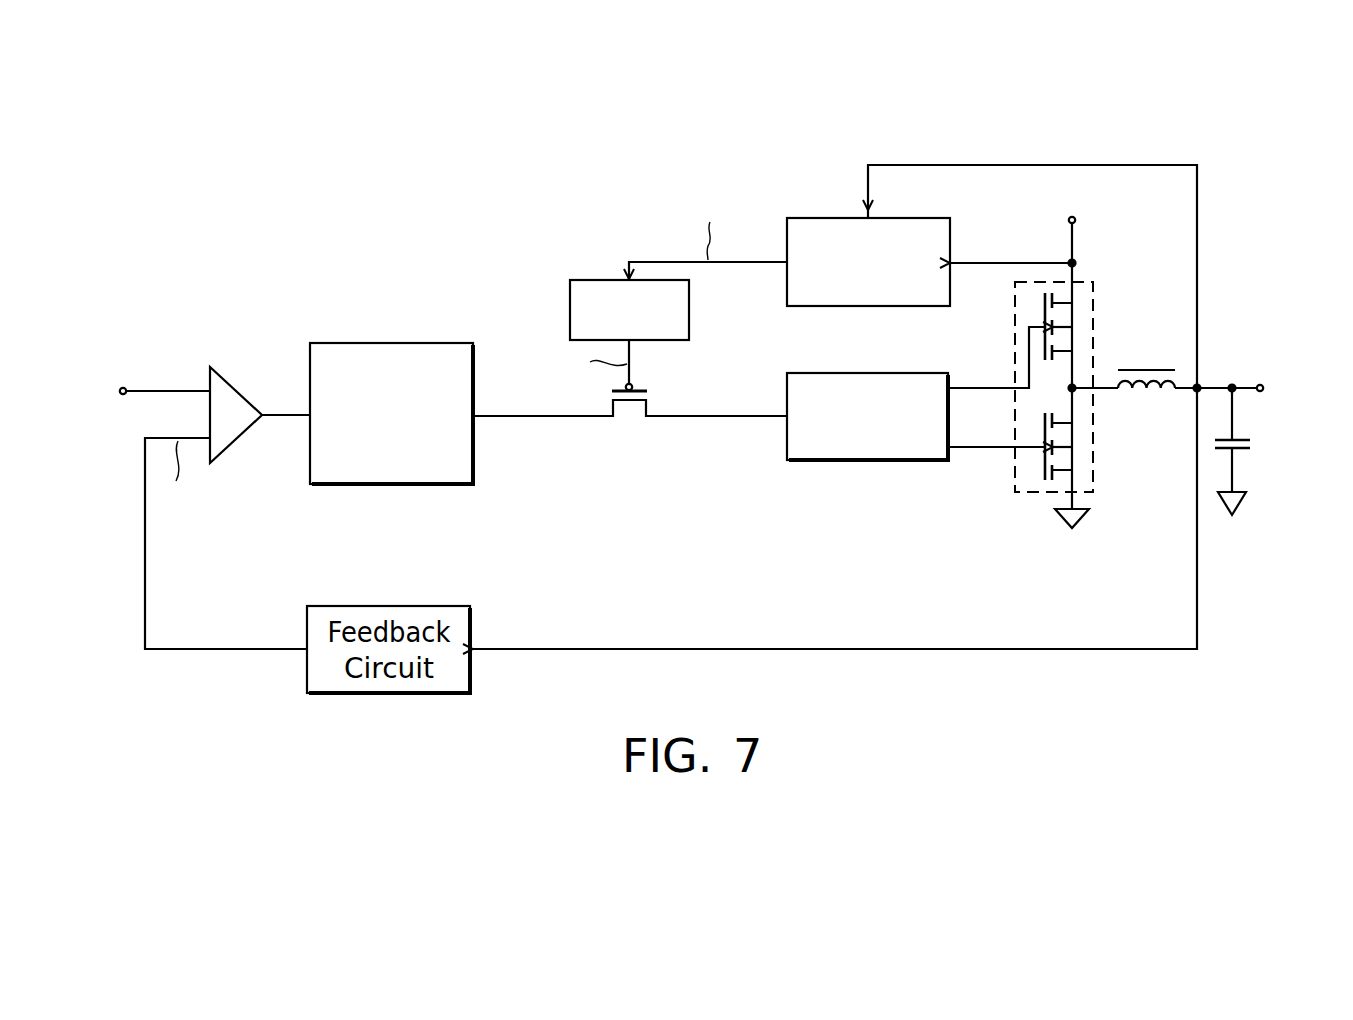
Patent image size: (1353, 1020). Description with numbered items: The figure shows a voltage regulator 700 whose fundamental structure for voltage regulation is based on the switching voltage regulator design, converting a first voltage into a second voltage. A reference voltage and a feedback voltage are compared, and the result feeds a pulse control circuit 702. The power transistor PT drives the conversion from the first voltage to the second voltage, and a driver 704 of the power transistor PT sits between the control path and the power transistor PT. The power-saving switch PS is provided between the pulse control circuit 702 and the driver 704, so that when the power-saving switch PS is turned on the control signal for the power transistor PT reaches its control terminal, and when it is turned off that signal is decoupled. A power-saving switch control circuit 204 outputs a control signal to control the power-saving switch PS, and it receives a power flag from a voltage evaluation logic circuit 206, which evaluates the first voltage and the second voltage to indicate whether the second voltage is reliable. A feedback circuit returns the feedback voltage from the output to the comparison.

The voltage regulator 700 is at (127, 112).
The pulse control circuit 702 is at (310, 343).
The driver 704 is at (787, 373).
The power-saving switch control circuit 204 is at (652, 324).
The voltage evaluation logic circuit 206 is at (891, 278).
The power-saving switch PS is at (630, 420).
The power transistor PT is at (1015, 493).